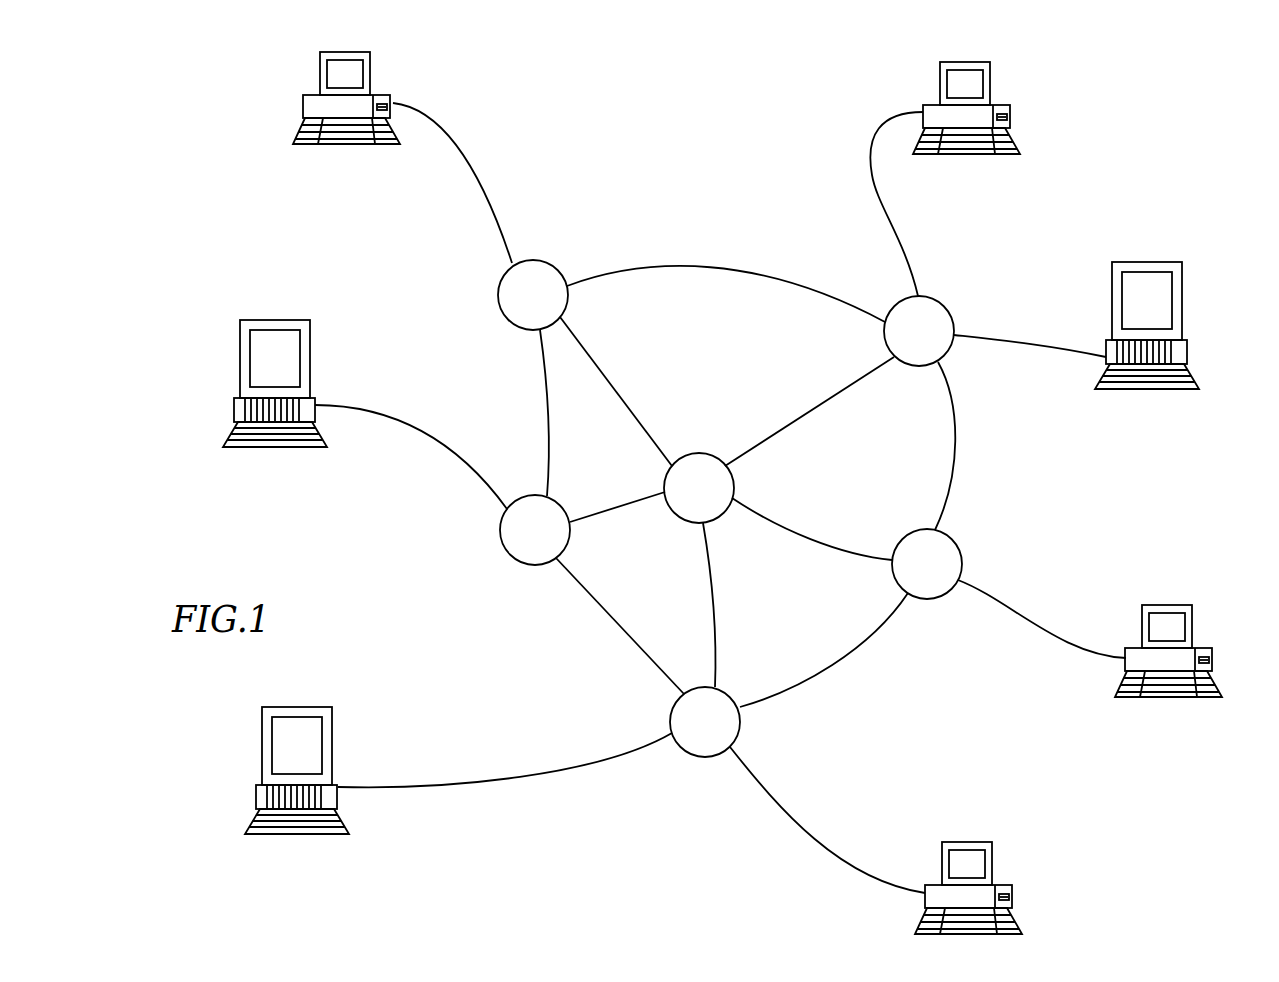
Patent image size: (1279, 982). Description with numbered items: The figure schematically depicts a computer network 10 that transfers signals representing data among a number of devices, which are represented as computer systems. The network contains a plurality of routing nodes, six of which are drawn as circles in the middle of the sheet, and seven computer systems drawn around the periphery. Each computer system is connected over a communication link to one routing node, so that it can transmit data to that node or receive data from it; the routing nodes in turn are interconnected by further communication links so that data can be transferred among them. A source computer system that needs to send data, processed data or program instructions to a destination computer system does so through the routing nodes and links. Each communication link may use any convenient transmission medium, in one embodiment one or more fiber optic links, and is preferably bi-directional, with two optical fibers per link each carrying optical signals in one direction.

The computer network 10 is at (210, 136).